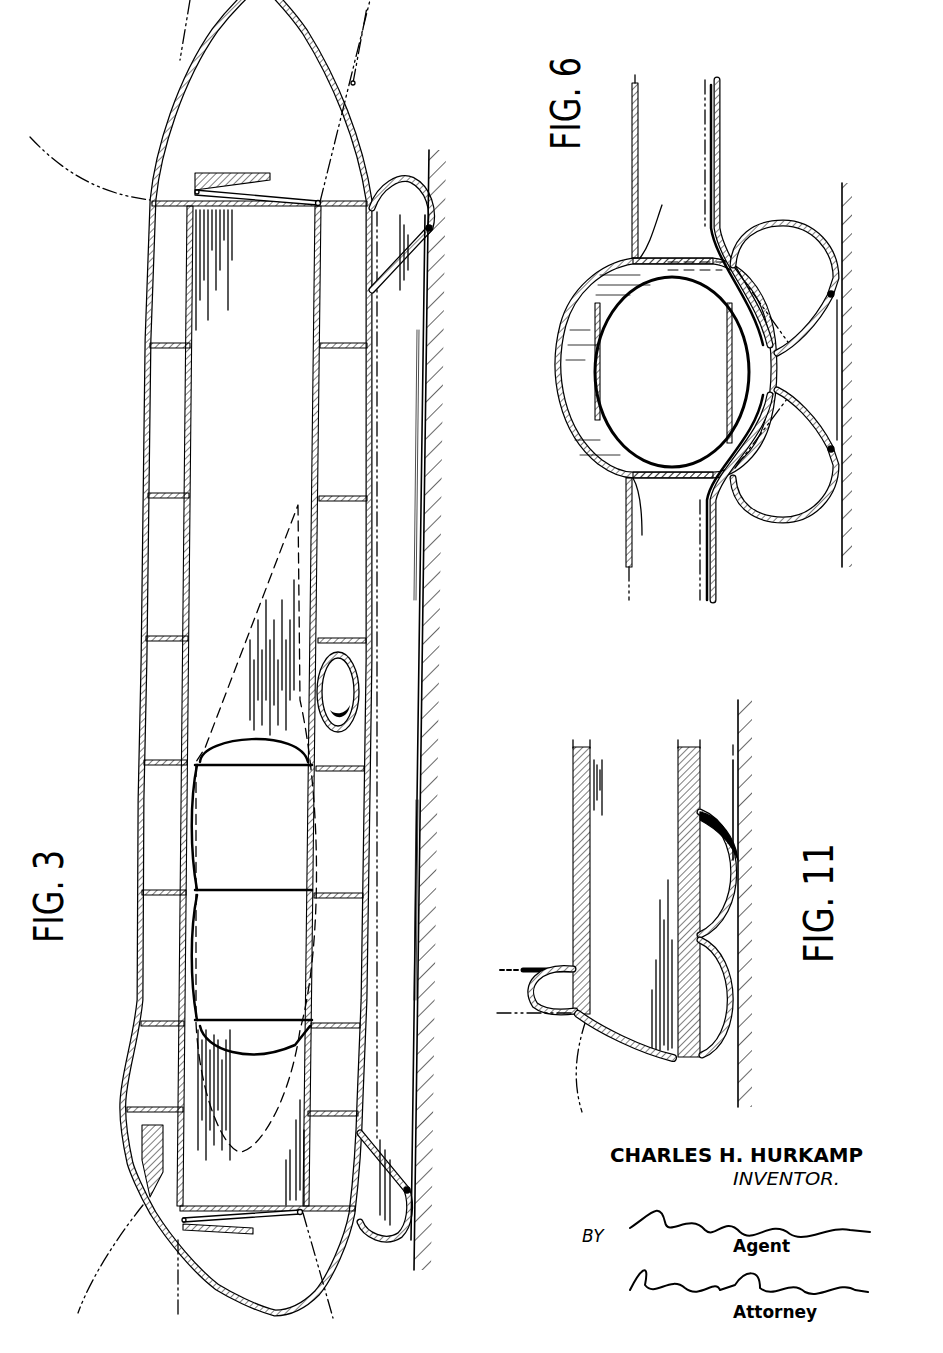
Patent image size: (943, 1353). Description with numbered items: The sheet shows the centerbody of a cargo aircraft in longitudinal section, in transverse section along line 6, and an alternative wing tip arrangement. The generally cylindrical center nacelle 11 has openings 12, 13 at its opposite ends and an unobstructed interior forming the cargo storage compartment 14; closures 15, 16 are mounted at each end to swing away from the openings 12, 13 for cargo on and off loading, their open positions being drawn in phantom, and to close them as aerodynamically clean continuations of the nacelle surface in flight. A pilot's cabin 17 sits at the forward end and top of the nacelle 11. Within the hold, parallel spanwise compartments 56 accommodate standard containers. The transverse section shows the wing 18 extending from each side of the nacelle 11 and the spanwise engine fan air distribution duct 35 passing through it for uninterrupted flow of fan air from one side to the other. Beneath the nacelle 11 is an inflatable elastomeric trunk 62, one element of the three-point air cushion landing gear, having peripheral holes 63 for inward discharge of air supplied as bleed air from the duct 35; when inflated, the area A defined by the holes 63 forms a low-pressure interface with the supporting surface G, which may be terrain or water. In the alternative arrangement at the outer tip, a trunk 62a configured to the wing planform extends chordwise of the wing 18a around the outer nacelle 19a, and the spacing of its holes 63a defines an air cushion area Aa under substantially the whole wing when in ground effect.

In FIG. 3, the center body or nacelle 11 is at (122, 432).
In FIG. 6, the center body or nacelle 11 is at (582, 478).
In FIG. 3, the opening 12 is at (290, 1218).
In FIG. 3, the opening 13 is at (300, 192).
In FIG. 3, the cargo storage compartment 14 is at (253, 455).
In FIG. 6, the cargo storage compartment 14 is at (668, 348).
In FIG. 3, the closure 15 is at (96, 1258).
In FIG. 3, the closure 16 is at (164, 112).
In FIG. 3, the pilot's compartment or cabin 17 is at (126, 1168).
In FIG. 3, the wing 18 is at (264, 576).
In FIG. 6, the wing 18 is at (630, 206).
In FIG. 3, the engine fan air distribution duct 35 is at (343, 680).
In FIG. 6, the engine fan air distribution duct 35 is at (736, 128).
In FIG. 3, the spanwise cargo compartment 56 is at (262, 815).
In FIG. 3, the inflatable elastomeric trunk 62 is at (402, 178).
In FIG. 6, the inflatable elastomeric trunk 62 is at (770, 222).
In FIG. 3, the peripheral slot or hole 63 is at (432, 229).
In FIG. 6, the peripheral slot or hole 63 is at (830, 292).
In FIG. 3, the supporting surface level G is at (424, 400).
In FIG. 6, the supporting surface level G is at (844, 342).
In FIG. 3, the air cushion area A is at (424, 462).
In FIG. 6, the air cushion area A is at (838, 386).
In FIG. 3, the section line 6— 6 is at (133, 682).
In FIG. 11, the wing 18a is at (574, 884).
In FIG. 11, the inflatable trunk 62a is at (740, 900).
In FIG. 11, the hole 63a is at (742, 850).
In FIG. 11, the air cushion area Aa is at (736, 790).
In FIG. 11, the outer nacelle 19a is at (706, 1060).